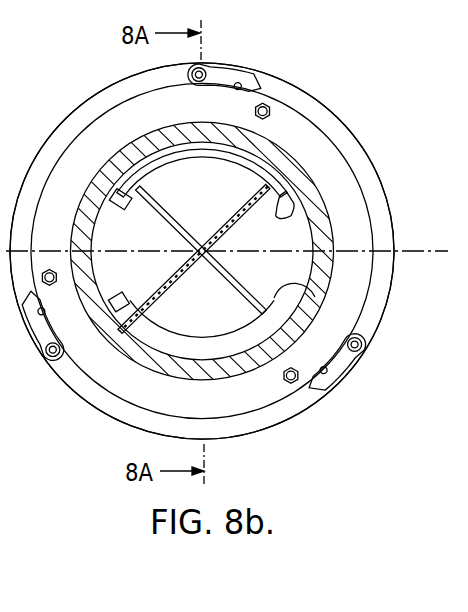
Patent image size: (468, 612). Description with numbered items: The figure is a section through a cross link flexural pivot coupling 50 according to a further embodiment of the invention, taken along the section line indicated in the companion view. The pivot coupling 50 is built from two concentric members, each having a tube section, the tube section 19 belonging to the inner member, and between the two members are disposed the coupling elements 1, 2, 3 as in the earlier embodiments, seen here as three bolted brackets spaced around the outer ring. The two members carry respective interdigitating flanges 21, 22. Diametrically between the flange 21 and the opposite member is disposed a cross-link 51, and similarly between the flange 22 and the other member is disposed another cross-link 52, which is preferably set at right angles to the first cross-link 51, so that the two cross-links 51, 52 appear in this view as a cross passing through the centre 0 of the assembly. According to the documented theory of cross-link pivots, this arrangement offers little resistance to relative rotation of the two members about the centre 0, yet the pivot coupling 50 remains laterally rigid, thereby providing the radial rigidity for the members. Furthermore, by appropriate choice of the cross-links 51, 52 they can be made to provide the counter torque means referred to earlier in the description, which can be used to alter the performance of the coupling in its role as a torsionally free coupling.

The centre 0 is at (237, 251).
The coupling element 1 is at (218, 70).
The coupling element 2 is at (372, 336).
The coupling element 3 is at (72, 390).
The tube section 19 is at (316, 184).
The flange 21 is at (274, 217).
The flange 22 is at (278, 297).
The cross link flexural pivot coupling 50 is at (298, 436).
The cross-link 51 is at (160, 290).
The cross-link 52 is at (228, 278).